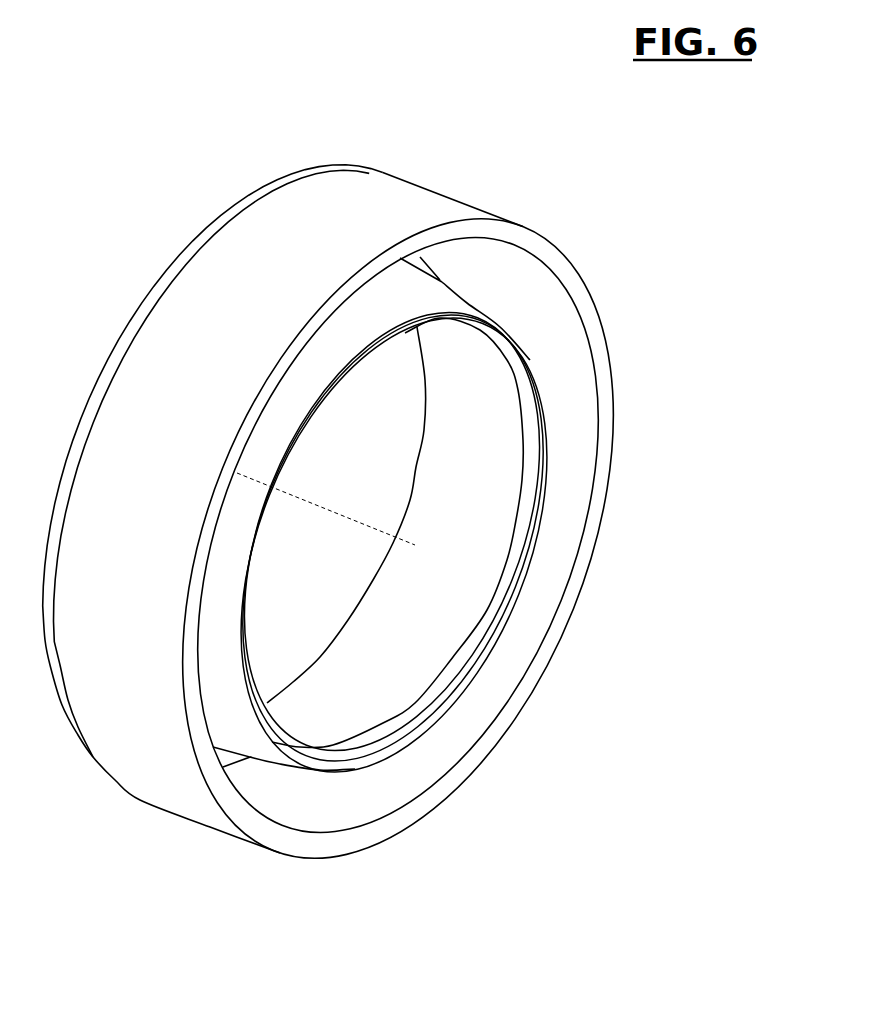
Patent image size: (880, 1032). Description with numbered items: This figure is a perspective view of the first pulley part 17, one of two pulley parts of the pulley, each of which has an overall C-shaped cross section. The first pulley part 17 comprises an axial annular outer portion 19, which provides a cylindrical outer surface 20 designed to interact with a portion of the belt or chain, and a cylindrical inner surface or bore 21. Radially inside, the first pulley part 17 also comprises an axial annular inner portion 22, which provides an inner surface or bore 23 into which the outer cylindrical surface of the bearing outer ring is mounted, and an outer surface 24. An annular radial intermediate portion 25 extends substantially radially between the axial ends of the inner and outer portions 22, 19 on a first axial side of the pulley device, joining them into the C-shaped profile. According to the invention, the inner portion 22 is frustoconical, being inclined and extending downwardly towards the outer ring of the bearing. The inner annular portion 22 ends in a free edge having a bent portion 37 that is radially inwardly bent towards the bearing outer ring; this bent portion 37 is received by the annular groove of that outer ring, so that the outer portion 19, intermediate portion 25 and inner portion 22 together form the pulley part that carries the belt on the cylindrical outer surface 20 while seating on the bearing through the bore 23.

The first pulley part 17 is at (296, 168).
The axial annular outer portion 19 is at (389, 186).
The cylindrical outer surface 20 is at (233, 264).
The cylindrical inner surface or bore 21 is at (530, 278).
The axial annular inner portion 22 is at (507, 488).
The inner surface or bore 23 is at (465, 565).
The outer surface 24 is at (240, 740).
The annular radial intermediate portion 25 is at (423, 265).
The bent portion 37 is at (459, 328).